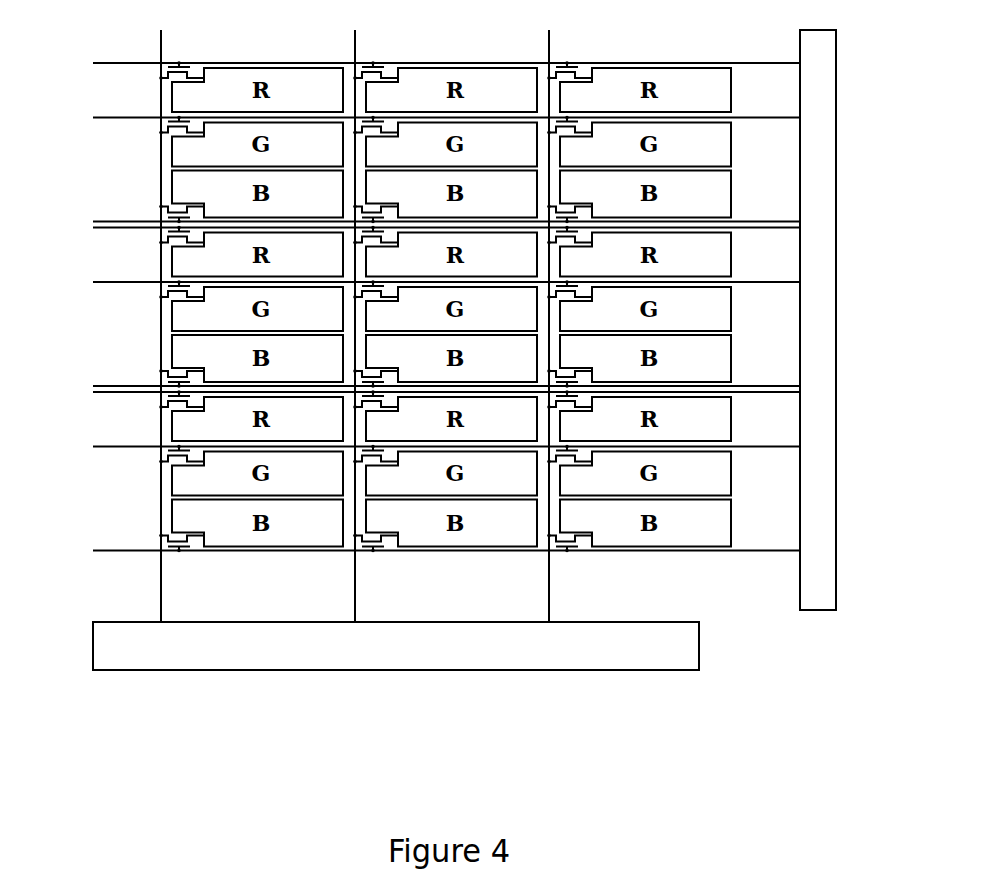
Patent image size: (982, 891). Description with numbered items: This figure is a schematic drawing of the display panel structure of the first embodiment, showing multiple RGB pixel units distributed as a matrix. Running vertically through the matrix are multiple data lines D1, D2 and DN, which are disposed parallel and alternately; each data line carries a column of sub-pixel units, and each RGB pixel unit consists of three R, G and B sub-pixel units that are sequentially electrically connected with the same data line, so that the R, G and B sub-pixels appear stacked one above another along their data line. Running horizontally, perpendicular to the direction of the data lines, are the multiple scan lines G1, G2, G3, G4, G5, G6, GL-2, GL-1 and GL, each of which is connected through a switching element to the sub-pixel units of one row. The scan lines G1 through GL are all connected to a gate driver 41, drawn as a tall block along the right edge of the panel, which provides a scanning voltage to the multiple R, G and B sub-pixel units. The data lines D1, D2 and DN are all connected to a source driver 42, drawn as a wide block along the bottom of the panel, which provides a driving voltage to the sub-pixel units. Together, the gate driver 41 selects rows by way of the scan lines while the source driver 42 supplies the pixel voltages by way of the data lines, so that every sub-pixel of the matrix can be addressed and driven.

The gate driver 41 is at (822, 382).
The source driver 42 is at (682, 642).
The data line D1 is at (159, 312).
The data line D2 is at (354, 312).
The data line DN is at (548, 311).
The scan line G1 is at (432, 66).
The scan line G2 is at (432, 121).
The scan line G3 is at (432, 211).
The scan line G4 is at (432, 237).
The scan line G5 is at (432, 282).
The scan line G6 is at (432, 377).
The scan line GL-2 is at (432, 406).
The scan line GL-1 is at (432, 457).
The scan line GL is at (432, 559).